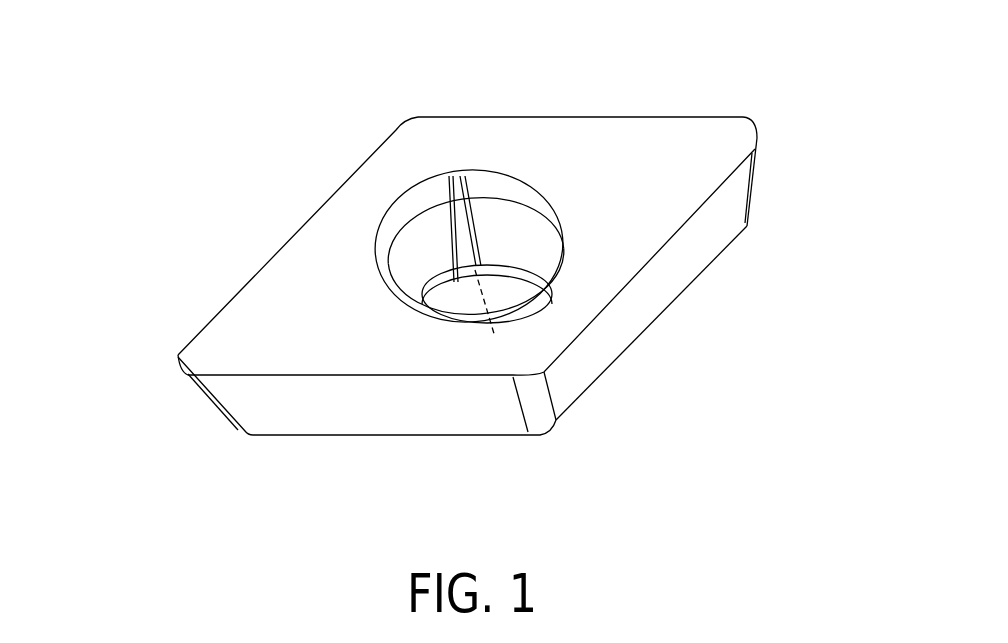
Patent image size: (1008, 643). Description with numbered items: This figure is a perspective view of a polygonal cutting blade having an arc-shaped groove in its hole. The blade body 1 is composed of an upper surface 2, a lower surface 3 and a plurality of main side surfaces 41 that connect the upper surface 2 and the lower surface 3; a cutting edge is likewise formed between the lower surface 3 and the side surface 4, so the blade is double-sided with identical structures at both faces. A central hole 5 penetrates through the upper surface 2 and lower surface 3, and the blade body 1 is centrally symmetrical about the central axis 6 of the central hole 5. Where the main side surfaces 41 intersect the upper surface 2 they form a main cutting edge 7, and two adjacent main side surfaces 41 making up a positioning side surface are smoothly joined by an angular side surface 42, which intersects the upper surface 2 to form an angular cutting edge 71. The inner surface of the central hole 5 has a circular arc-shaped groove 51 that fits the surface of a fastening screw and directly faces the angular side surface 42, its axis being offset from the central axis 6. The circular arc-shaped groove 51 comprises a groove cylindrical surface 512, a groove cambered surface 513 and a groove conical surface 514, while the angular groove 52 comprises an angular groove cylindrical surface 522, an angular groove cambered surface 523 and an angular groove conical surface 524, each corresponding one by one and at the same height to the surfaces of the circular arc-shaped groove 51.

The blade body 1 is at (463, 246).
The upper surface 2 is at (481, 215).
The lower surface 3 is at (658, 323).
The side surface 4 is at (404, 432).
The main side surface 41 is at (772, 251).
The angular side surface 42 is at (795, 230).
The central hole 5 is at (414, 322).
The circular arc-shaped groove 51 is at (551, 162).
The groove cylindrical surface 512 is at (543, 190).
The groove cambered surface 513 is at (525, 175).
The groove conical surface 514 is at (523, 132).
The angular groove 52 is at (369, 177).
The angular groove cylindrical surface 522 is at (398, 208).
The angular groove cambered surface 523 is at (363, 175).
The angular groove conical surface 524 is at (351, 166).
The central axis 6 is at (423, 404).
The main cutting edge 7 is at (601, 96).
The angular cutting edge 71 is at (168, 360).